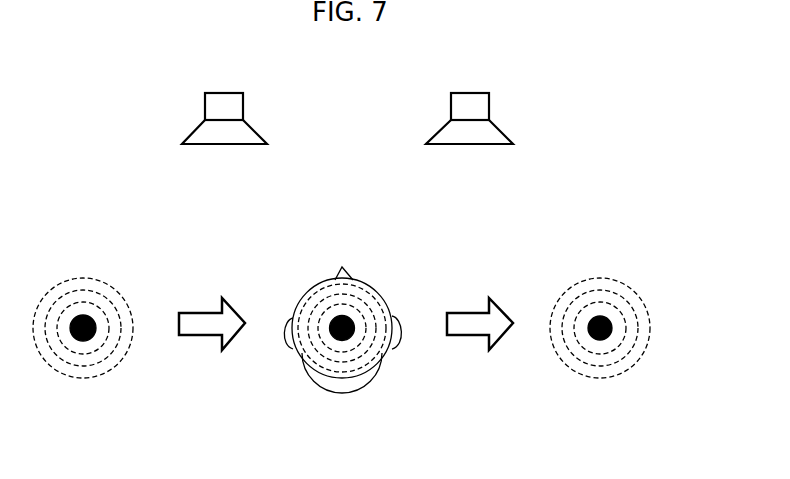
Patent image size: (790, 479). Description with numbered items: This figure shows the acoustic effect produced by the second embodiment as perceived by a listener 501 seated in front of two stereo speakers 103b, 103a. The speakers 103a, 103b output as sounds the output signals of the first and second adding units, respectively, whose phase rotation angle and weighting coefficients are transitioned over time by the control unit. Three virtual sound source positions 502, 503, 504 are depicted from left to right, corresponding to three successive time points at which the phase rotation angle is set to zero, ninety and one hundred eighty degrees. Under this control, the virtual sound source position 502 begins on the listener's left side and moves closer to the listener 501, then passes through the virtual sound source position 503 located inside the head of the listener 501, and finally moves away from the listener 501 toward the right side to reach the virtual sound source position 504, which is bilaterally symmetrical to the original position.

The stereo speaker 103a is at (493, 131).
The stereo speaker 103b is at (248, 131).
The listener 501 is at (343, 266).
The virtual sound source position 502 is at (88, 317).
The virtual sound source position 503 is at (350, 318).
The virtual sound source position 504 is at (605, 316).